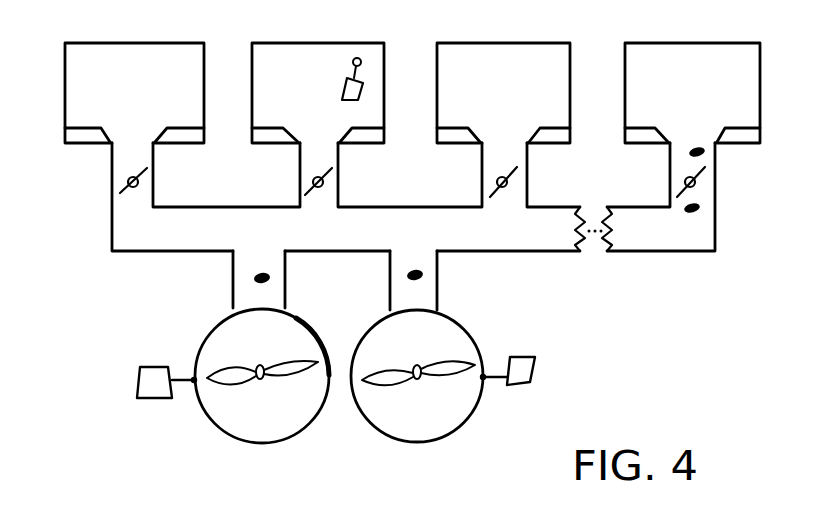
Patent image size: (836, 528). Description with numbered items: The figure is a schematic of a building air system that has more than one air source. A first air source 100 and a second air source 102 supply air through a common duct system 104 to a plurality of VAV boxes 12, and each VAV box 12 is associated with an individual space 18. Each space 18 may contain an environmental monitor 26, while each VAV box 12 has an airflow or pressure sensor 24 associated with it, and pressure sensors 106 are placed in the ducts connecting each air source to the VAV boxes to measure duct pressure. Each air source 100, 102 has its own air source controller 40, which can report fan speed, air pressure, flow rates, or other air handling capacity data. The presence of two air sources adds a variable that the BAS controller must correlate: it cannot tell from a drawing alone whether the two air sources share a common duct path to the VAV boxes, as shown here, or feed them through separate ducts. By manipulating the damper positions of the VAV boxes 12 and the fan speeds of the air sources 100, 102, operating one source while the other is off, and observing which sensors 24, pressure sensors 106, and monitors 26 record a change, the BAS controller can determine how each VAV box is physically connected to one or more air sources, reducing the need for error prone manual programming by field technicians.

The space 18 is at (224, 93).
The environmental monitor 26 is at (363, 90).
The VAV box 12 is at (110, 182).
The airflow or pressure sensor 24 is at (704, 151).
The duct system 104 is at (188, 231).
The pressure sensor 106 is at (270, 276).
The first air source 100 is at (237, 440).
The second air source 102 is at (398, 438).
The air source controller 40 is at (146, 400).